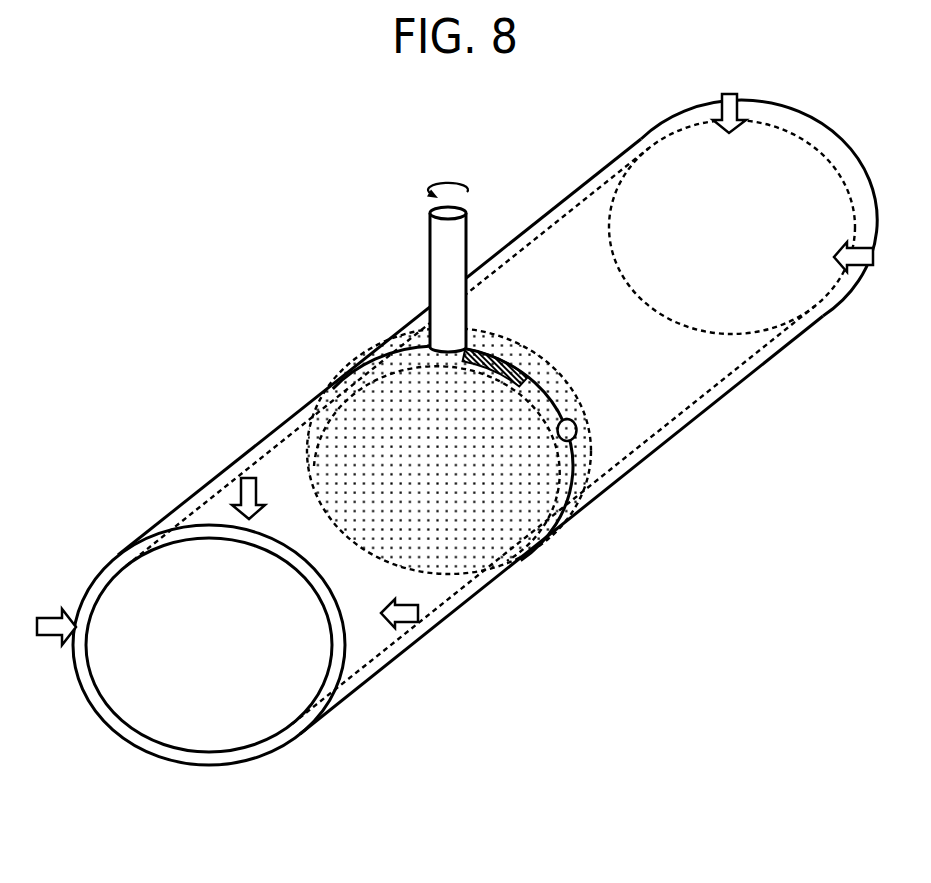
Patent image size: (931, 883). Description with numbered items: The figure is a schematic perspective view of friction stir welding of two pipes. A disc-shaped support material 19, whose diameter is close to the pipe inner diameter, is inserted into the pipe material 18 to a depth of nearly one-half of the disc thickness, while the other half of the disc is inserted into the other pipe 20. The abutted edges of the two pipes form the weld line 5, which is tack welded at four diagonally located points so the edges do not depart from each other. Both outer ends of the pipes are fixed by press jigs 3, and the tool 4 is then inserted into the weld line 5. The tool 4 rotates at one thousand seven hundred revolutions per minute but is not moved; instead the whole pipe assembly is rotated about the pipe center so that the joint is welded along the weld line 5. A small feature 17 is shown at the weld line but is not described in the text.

The press jigs 3 is at (48, 620).
The tool 4 is at (437, 250).
The weld line 5 is at (573, 460).
The small hole 17 is at (577, 430).
The pipe material 18 is at (373, 637).
The disc-shaped support material 19 is at (356, 406).
The pipe 20 is at (733, 352).